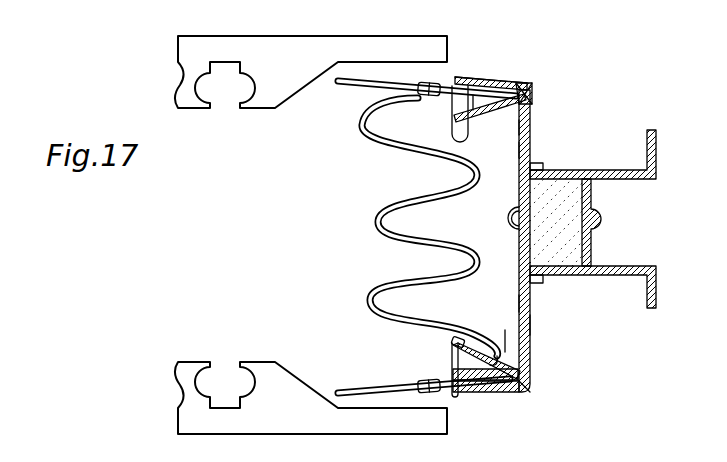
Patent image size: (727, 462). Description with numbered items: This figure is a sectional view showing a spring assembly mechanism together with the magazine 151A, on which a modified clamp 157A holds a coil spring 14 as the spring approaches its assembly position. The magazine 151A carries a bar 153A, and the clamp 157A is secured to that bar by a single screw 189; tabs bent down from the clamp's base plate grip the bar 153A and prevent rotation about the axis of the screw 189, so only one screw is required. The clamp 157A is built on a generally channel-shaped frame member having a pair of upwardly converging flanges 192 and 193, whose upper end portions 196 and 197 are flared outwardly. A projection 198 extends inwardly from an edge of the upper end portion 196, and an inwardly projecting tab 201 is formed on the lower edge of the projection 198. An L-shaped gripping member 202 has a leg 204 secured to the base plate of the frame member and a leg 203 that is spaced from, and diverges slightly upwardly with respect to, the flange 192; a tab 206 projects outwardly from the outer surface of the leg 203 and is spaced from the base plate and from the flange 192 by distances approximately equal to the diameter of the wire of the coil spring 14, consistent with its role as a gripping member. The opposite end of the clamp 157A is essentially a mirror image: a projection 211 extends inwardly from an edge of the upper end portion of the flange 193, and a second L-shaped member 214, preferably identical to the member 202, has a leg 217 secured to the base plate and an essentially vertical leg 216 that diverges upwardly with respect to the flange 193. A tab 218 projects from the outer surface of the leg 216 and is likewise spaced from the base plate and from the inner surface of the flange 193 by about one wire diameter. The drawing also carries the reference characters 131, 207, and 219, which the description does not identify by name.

The coil spring 14 is at (391, 210).
The plate 131 is at (532, 372).
The magazine 151A is at (617, 275).
The bar 153A is at (572, 178).
The modified clamp 157A is at (535, 321).
The screw 189 is at (510, 215).
The flange 192 is at (485, 382).
The flange 193 is at (523, 89).
The upper end portion 196 is at (457, 391).
The upper end portion 197 is at (457, 82).
The projection 198 is at (452, 368).
The tab 201 is at (452, 352).
The L-shaped gripping member 202 is at (512, 335).
The leg 203 is at (497, 348).
The leg 204 is at (520, 306).
The tab 206 is at (504, 393).
The lip 207 is at (498, 394).
The projection 211 is at (453, 126).
The L-shaped member 214 is at (519, 128).
The leg 216 is at (474, 112).
The leg 217 is at (519, 148).
The tab 218 is at (534, 93).
The strip 219 is at (516, 80).